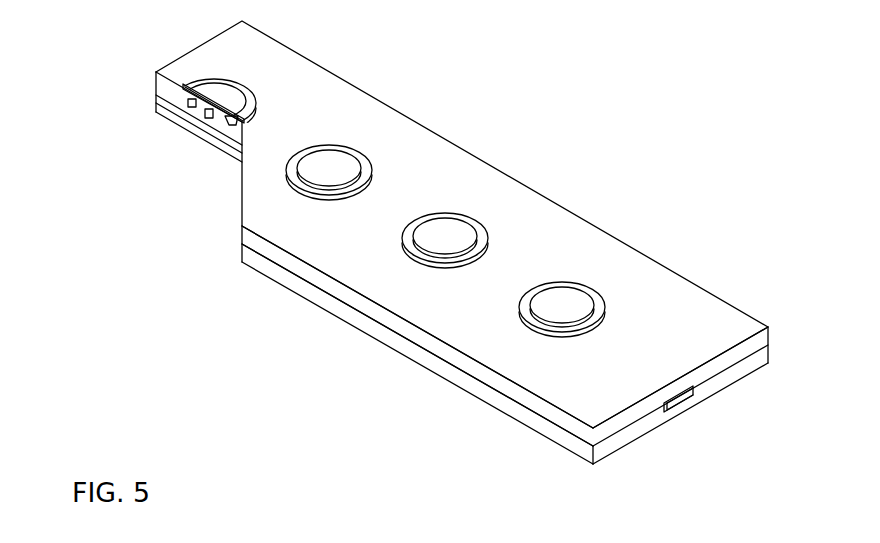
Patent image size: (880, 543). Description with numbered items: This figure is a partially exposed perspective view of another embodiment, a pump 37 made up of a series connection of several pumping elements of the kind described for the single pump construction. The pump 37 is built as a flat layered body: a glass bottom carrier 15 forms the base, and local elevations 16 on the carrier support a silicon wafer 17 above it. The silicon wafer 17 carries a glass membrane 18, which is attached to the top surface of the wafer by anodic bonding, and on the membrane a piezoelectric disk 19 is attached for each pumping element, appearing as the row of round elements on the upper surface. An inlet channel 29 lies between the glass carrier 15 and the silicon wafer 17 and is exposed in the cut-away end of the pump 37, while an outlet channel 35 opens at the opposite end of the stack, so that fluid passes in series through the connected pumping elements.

The glass bottom carrier 15 is at (346, 316).
The local elevations 16 is at (197, 125).
The silicon wafer 17 is at (509, 393).
The glass membrane 18 is at (489, 232).
The piezoelectric disk 19 is at (458, 227).
The inlet channel 29 is at (153, 92).
The outlet channel 35 is at (683, 403).
The pump 37 is at (413, 157).